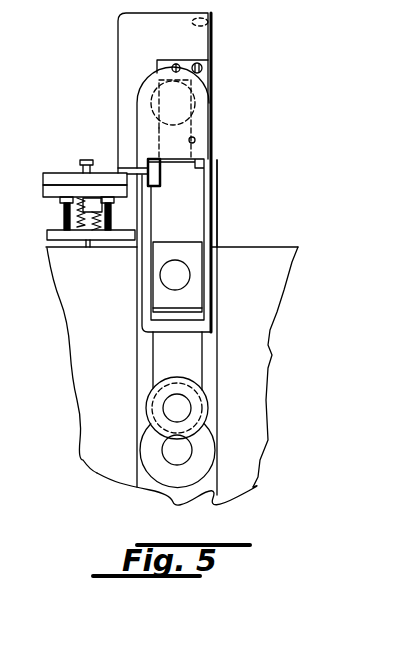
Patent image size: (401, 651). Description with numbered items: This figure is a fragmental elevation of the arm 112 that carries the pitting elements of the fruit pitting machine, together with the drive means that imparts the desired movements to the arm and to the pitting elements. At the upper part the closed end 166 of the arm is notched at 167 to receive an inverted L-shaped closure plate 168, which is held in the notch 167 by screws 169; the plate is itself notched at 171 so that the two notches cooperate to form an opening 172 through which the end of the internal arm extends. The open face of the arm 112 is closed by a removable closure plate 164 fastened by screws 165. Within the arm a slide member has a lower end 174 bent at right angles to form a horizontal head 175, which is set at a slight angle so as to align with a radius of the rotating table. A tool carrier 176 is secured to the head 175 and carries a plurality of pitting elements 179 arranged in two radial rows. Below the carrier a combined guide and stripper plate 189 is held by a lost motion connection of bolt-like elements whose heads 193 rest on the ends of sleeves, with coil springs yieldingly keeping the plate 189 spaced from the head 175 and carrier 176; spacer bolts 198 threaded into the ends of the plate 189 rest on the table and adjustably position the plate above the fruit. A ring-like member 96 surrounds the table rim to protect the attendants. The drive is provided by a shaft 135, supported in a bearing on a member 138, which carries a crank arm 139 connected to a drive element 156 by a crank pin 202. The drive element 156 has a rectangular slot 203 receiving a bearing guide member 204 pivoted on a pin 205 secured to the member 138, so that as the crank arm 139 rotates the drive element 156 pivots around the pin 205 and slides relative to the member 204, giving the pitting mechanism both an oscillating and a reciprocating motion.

The ring-like member 96 is at (282, 252).
The arm 112 is at (74, 152).
The shaft 135 is at (170, 462).
The member 138 is at (197, 493).
The crank arm 139 is at (203, 440).
The drive element 156 is at (213, 218).
The closure plate 164 is at (212, 52).
The screws 165 is at (208, 22).
The closed end 166 is at (178, 48).
The notch 167 is at (150, 98).
The closure plate 168 is at (208, 77).
The screws 169 is at (203, 68).
The notch 171 is at (197, 140).
The opening 172 is at (200, 152).
The lower end 174 is at (133, 178).
The head 175 is at (57, 177).
The tool carrier 176 is at (50, 187).
The pitting elements 179 is at (62, 222).
The combined guide and stripper plate 189 is at (120, 236).
The heads 193 is at (88, 159).
The spacer bolts 198 is at (92, 247).
The crank pin 202 is at (190, 410).
The rectangular slot 203 is at (196, 228).
The bearing guide member 204 is at (198, 300).
The pin 205 is at (190, 277).